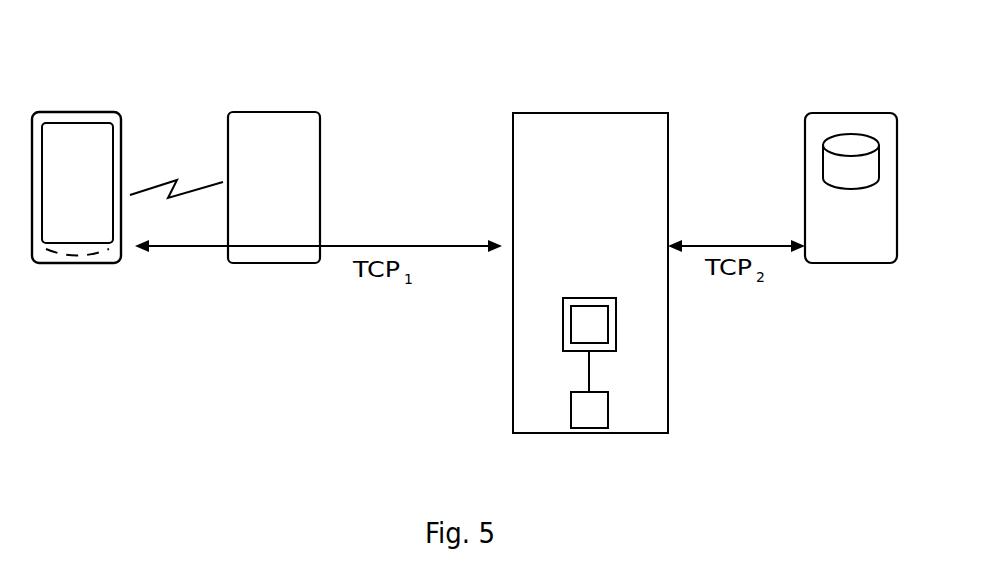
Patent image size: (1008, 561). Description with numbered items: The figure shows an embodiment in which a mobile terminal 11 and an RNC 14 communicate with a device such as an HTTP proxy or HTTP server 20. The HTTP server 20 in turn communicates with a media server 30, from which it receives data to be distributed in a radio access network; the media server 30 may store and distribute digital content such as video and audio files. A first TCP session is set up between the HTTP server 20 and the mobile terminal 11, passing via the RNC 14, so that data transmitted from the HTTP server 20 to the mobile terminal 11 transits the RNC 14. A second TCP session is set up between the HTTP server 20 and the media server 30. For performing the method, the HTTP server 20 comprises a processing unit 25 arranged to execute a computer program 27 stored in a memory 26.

The mobile terminal 11 is at (65, 112).
The RNC 14 is at (268, 112).
The HTTP server 20 is at (558, 113).
The processing unit 25 is at (595, 417).
The memory 26 is at (580, 352).
The computer program 27 is at (588, 323).
The media server 30 is at (827, 113).